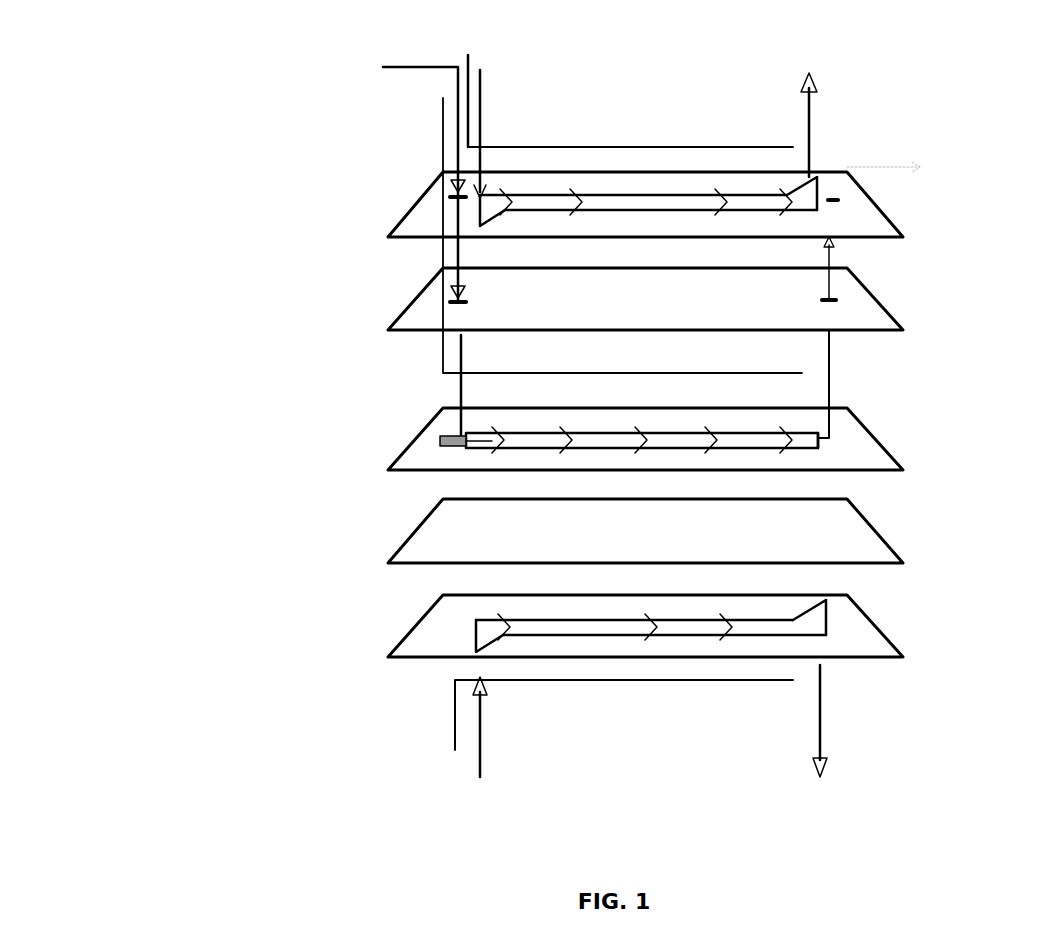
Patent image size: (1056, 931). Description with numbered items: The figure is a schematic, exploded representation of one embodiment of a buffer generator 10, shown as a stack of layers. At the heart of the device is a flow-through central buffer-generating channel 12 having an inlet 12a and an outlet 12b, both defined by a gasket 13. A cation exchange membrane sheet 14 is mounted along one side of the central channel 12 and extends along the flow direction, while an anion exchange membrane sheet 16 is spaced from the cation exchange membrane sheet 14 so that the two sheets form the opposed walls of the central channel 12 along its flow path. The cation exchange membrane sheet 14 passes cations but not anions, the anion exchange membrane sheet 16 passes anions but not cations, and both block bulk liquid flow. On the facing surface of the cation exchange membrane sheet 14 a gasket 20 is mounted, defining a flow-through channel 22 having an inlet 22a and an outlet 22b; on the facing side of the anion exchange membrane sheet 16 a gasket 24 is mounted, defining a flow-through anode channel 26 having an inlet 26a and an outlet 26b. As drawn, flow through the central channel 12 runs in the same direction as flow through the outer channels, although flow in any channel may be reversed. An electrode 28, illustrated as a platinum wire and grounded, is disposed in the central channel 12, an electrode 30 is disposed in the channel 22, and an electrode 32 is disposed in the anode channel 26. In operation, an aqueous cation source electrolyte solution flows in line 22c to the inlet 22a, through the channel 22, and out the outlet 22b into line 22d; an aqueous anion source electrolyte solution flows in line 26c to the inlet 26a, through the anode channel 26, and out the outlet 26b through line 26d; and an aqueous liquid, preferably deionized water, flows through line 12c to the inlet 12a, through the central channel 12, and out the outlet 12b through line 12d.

The buffer generator 10 is at (260, 697).
The central buffer-generating channel 12 is at (523, 440).
The inlet 12a is at (450, 435).
The outlet 12b is at (823, 445).
The line 12c is at (437, 70).
The line 12d is at (827, 348).
The gasket 13 is at (850, 457).
The cation exchange membrane sheet 14 is at (410, 307).
The anion exchange membrane sheet 16 is at (423, 515).
The gasket 20 is at (417, 195).
The flow-through channel 22 is at (665, 193).
The inlet 22a is at (485, 138).
The outlet 22b is at (820, 188).
The line 22c is at (482, 78).
The line 22d is at (813, 113).
The gasket 24 is at (413, 660).
The flow-through anode channel 26 is at (757, 618).
The inlet 26a is at (478, 618).
The outlet 26b is at (828, 605).
The line 26c is at (483, 715).
The line 26d is at (824, 690).
The electrode 28 is at (588, 373).
The electrode 30 is at (600, 147).
The electrode 32 is at (680, 682).